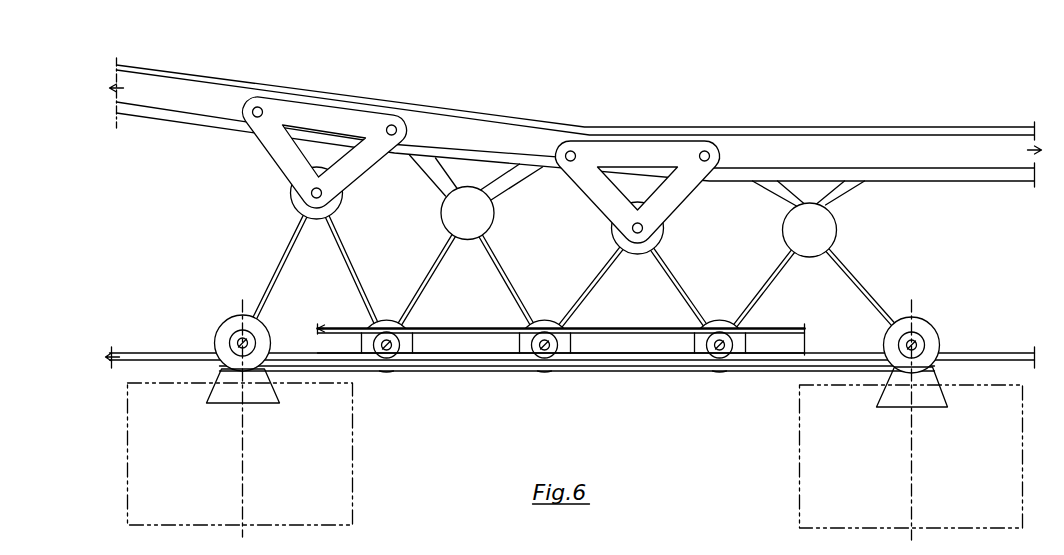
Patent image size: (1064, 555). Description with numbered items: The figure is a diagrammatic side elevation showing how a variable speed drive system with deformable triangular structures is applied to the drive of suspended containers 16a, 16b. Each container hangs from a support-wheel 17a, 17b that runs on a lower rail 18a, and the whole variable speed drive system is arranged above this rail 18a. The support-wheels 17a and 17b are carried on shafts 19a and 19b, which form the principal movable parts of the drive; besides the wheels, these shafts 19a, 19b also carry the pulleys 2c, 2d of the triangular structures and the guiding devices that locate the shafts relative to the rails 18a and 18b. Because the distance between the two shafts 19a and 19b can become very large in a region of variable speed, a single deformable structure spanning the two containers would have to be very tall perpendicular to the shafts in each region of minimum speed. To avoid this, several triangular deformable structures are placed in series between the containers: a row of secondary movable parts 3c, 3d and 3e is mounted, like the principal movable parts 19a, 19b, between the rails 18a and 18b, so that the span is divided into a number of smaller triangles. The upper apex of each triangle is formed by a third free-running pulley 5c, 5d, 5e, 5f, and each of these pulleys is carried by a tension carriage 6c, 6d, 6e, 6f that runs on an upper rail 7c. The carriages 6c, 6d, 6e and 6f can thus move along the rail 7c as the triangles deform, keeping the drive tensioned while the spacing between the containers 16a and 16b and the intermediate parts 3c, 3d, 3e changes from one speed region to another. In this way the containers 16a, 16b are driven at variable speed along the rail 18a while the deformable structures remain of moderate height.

The pulley 2c is at (262, 337).
The pulley 2d is at (932, 348).
The secondary movable part 3c is at (392, 342).
The secondary movable part 3d is at (553, 340).
The secondary movable part 3e is at (730, 340).
The third free-running pulley 5c is at (318, 170).
The third free-running pulley 5d is at (468, 198).
The third free-running pulley 5e is at (637, 205).
The third free-running pulley 5f is at (810, 213).
The tension carriage 6c is at (355, 127).
The tension carriage 6d is at (507, 183).
The tension carriage 6e is at (665, 158).
The tension carriage 6f is at (848, 193).
The rail 7c is at (940, 152).
The suspended container 16a is at (337, 467).
The suspended container 16b is at (800, 452).
The support-wheel 17a is at (236, 344).
The support-wheel 17b is at (919, 344).
The rail 18a is at (485, 355).
The rail 18b is at (634, 328).
The shaft 19a is at (246, 341).
The shaft 19b is at (916, 342).